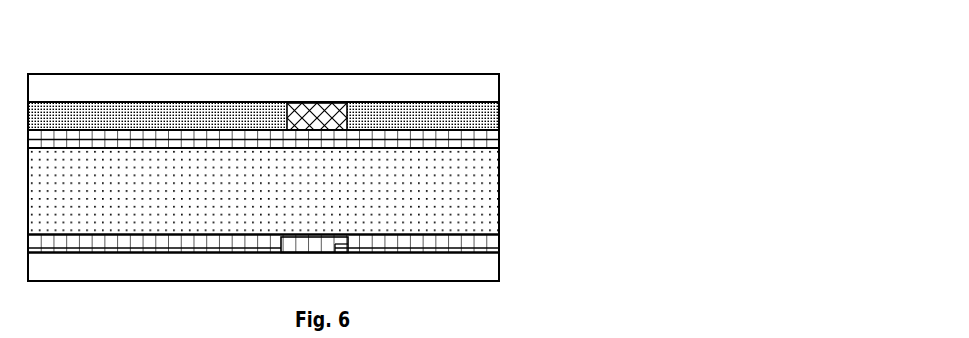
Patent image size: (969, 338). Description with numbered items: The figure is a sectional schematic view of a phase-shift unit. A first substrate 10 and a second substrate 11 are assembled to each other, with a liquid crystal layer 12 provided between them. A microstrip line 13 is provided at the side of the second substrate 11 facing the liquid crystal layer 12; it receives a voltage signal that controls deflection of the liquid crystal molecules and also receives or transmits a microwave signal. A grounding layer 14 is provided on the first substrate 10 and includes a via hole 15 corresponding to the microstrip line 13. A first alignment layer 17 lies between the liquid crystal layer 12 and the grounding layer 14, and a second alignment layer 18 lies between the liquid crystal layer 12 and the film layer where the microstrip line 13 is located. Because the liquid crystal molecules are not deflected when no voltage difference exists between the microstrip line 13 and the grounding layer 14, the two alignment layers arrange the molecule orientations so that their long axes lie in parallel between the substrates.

The first substrate 10 is at (499, 92).
The grounding layer 14 is at (499, 121).
The via hole 15 is at (308, 112).
The first alignment layer 17 is at (499, 143).
The liquid crystal layer 12 is at (499, 188).
The microstrip line 13 is at (499, 244).
The second alignment layer 18 is at (499, 239).
The second substrate 11 is at (499, 263).